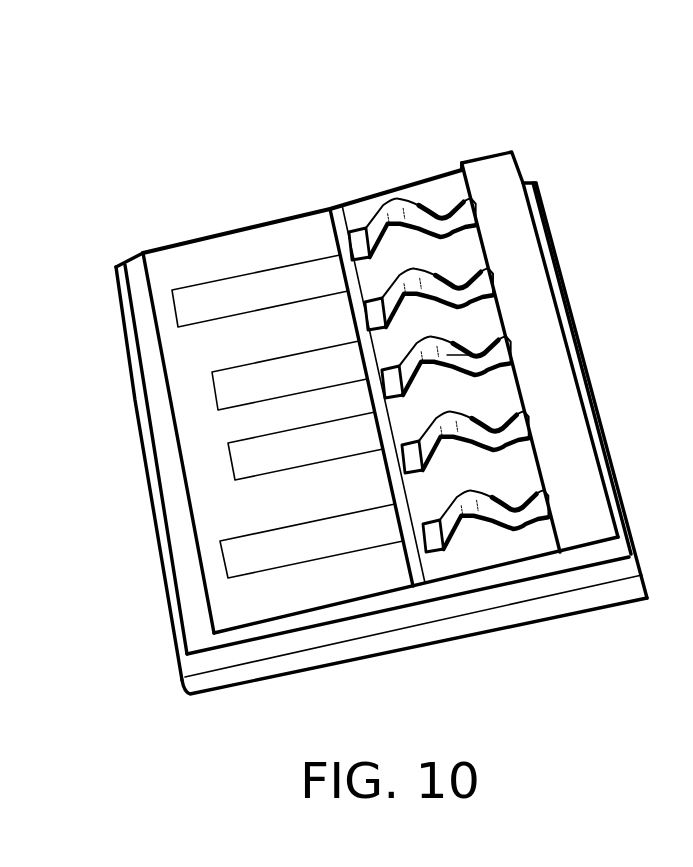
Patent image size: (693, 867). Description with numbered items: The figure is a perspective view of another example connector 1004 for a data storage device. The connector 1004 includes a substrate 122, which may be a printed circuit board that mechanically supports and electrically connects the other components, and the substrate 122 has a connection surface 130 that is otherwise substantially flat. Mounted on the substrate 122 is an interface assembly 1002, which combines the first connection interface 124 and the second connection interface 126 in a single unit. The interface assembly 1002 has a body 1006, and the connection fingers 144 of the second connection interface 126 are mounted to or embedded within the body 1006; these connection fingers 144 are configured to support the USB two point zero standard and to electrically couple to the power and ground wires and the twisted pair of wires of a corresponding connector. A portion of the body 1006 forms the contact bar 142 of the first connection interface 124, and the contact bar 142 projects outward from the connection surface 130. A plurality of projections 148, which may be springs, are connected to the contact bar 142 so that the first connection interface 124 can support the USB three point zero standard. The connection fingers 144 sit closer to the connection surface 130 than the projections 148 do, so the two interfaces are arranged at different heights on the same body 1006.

The connector 1004 is at (144, 100).
The interface assembly 1002 is at (280, 243).
The body 1006 is at (180, 457).
The second connection interface 126 is at (163, 217).
The contact bar 142 is at (518, 207).
The first connection interface 124 is at (473, 137).
The substrate 122 is at (203, 675).
The connection surface 130 is at (447, 603).
The connection fingers 144 is at (212, 374).
The projections 148 is at (410, 212).